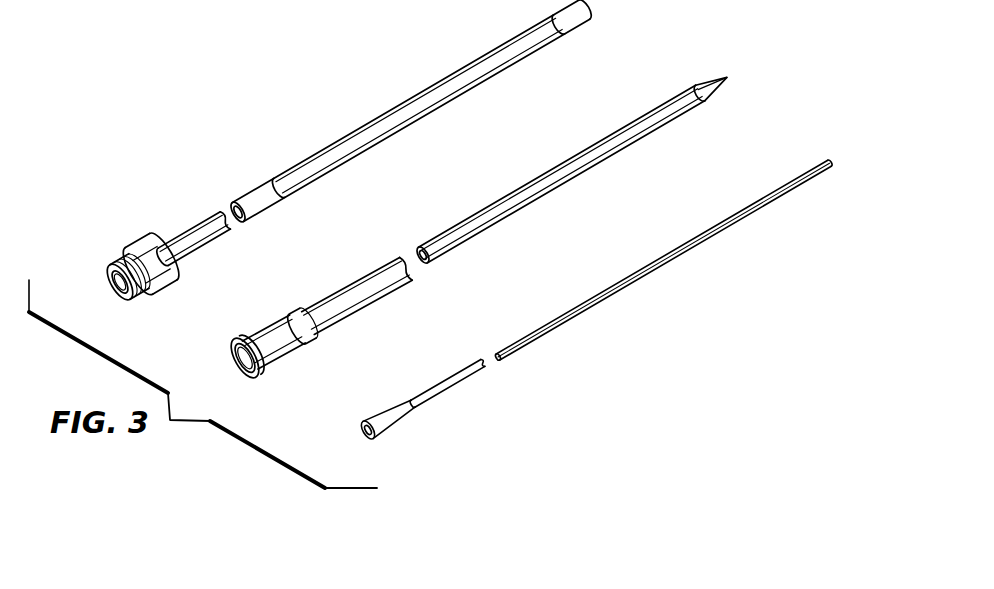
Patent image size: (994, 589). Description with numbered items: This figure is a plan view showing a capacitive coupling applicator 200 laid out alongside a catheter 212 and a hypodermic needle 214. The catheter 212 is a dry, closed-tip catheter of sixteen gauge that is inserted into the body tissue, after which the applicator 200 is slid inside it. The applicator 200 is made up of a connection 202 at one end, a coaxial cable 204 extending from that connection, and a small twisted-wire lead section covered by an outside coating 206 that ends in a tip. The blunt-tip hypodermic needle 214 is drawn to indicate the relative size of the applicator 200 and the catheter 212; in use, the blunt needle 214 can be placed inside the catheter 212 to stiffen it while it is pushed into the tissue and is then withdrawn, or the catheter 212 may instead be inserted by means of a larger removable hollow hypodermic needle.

The applicator 200 is at (250, 176).
The connection 202 is at (133, 302).
The coaxial cable 204 is at (224, 231).
The outside coating 206 is at (346, 132).
The catheter 212 is at (416, 251).
The hypodermic needle 214 is at (498, 354).